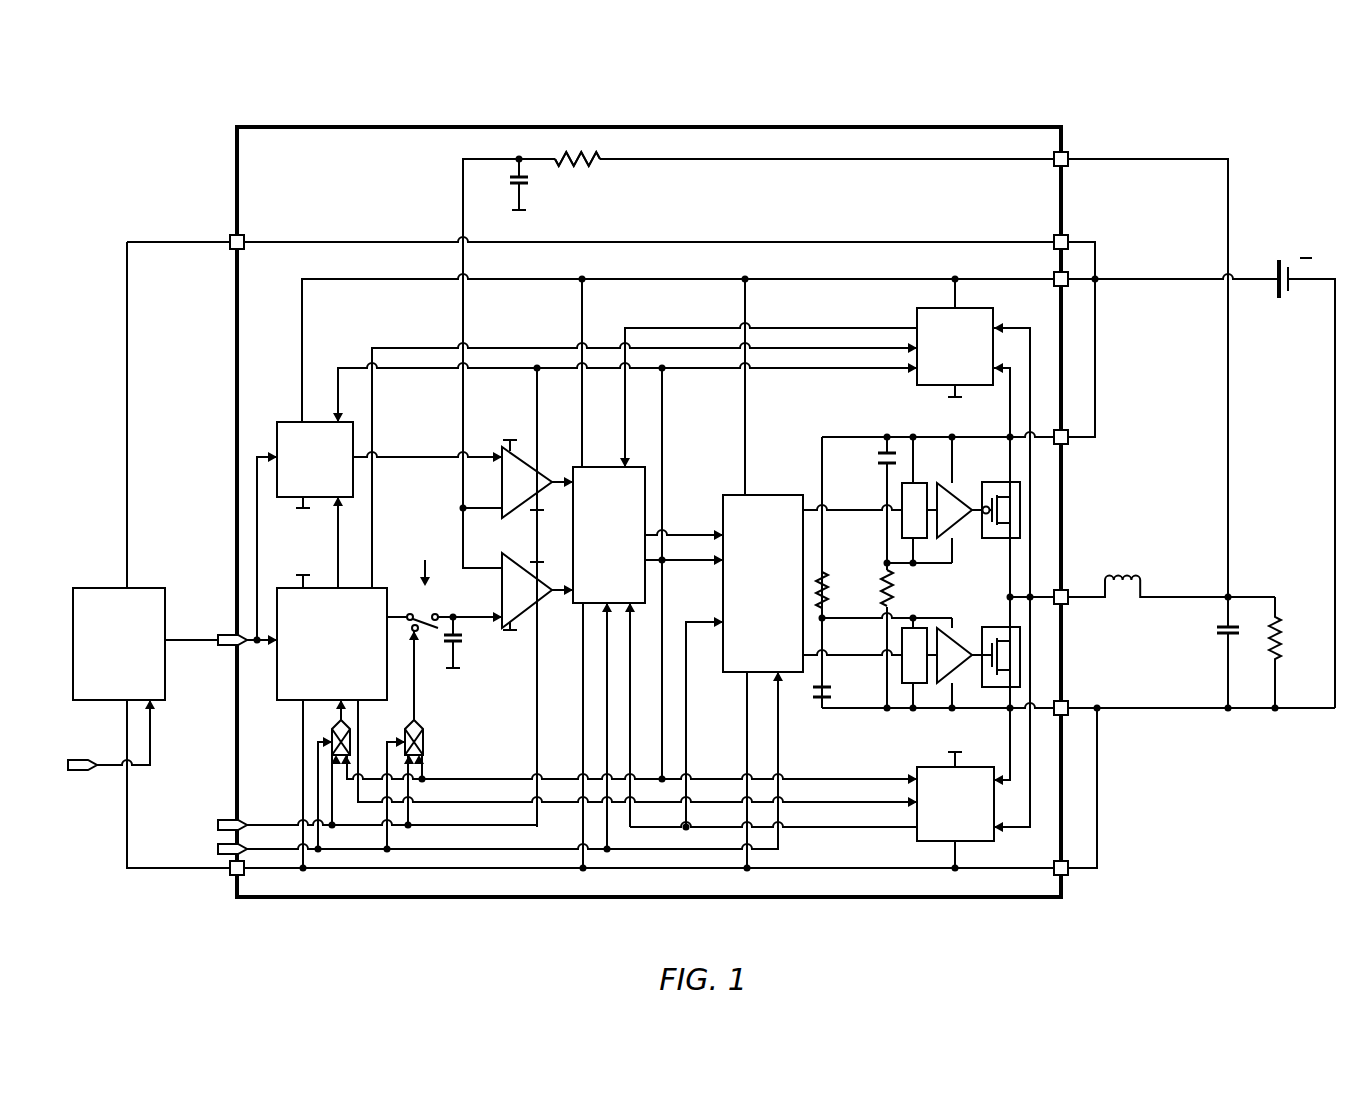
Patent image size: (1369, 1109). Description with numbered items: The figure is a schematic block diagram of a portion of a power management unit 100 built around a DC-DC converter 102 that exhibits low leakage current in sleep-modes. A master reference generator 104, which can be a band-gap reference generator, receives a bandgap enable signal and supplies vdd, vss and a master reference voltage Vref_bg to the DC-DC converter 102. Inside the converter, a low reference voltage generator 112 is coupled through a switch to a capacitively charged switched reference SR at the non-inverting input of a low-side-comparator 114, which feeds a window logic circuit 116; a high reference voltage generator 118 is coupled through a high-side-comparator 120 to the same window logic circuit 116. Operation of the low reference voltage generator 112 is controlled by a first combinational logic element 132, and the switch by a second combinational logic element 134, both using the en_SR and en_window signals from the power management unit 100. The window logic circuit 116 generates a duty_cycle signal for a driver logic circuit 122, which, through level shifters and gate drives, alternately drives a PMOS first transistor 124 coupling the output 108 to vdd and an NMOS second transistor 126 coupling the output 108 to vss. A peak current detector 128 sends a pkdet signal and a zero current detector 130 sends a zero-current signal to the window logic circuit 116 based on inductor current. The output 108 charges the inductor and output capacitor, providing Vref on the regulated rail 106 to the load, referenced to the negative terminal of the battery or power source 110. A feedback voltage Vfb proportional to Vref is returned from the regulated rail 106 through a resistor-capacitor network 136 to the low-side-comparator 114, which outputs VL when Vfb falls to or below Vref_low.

The power management unit 100 is at (701, 482).
The DC-DC converter 102 is at (649, 512).
The master reference generator 104 is at (93, 588).
The regulated rail 106 is at (1260, 593).
The output 108 is at (1068, 600).
The battery or power source 110 is at (1288, 300).
The low reference voltage generator 112 is at (332, 644).
The low-side-comparator 114 is at (524, 596).
The window logic circuit 116 is at (609, 535).
The high reference voltage generator 118 is at (276, 422).
The high-side-comparator 120 is at (524, 473).
The driver logic circuit 122 is at (763, 583).
The PMOS first transistor 124 is at (980, 482).
The NMOS second transistor 126 is at (980, 627).
The peak current detector 128 is at (930, 362).
The zero current detector 130 is at (955, 786).
The first combinational logic element 132 is at (352, 726).
The second combinational logic element 134 is at (425, 746).
The resistor-capacitor network 136 is at (565, 189).